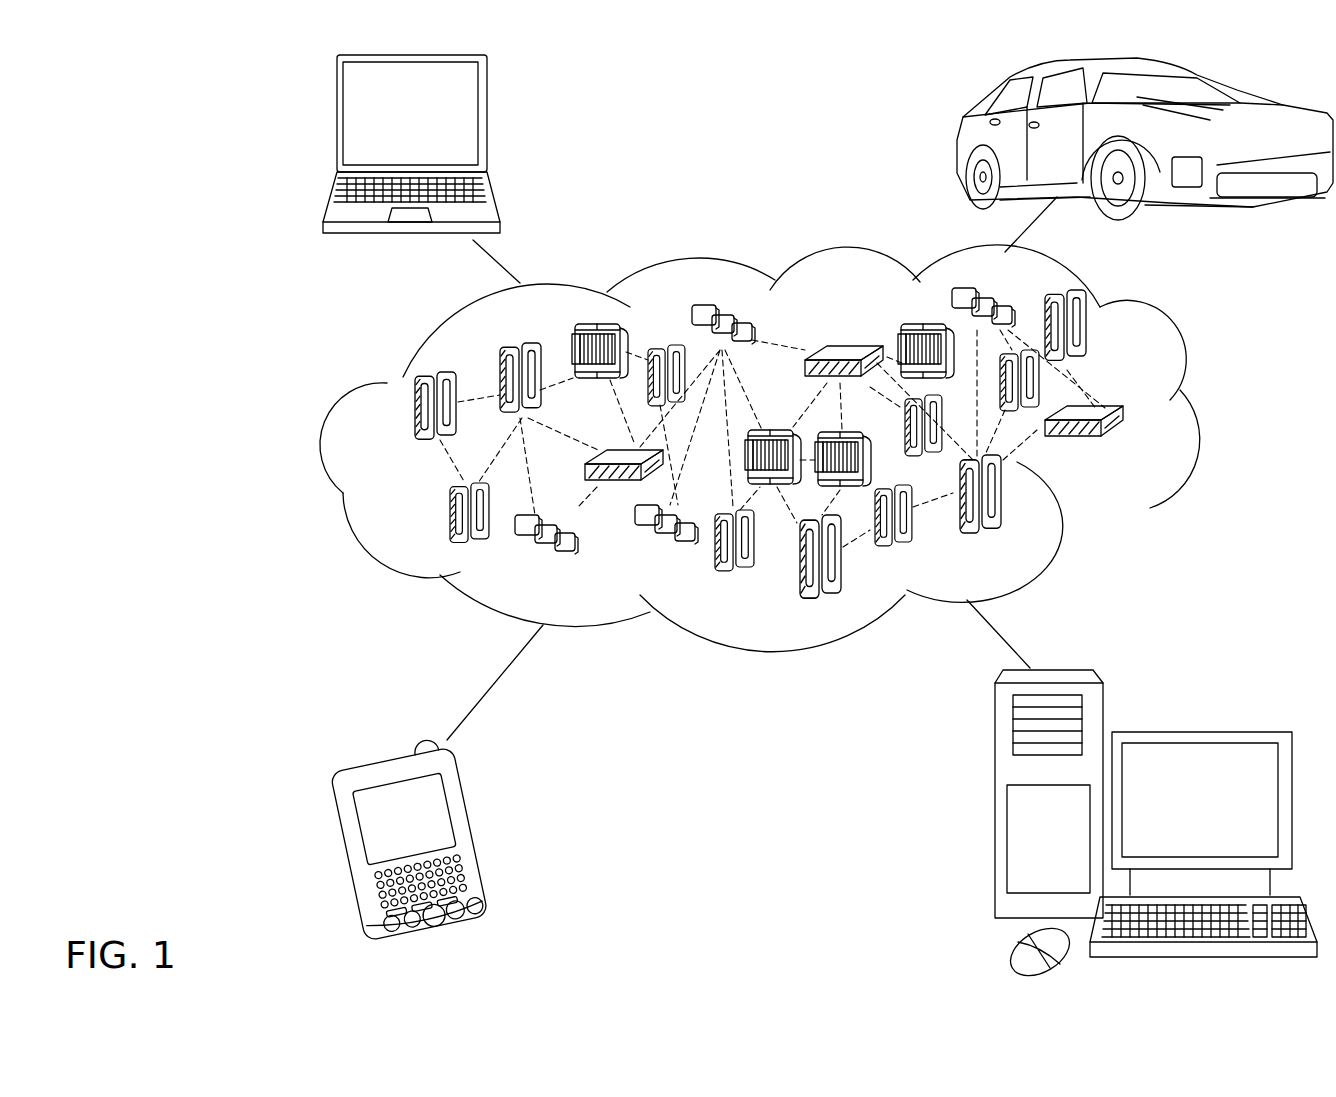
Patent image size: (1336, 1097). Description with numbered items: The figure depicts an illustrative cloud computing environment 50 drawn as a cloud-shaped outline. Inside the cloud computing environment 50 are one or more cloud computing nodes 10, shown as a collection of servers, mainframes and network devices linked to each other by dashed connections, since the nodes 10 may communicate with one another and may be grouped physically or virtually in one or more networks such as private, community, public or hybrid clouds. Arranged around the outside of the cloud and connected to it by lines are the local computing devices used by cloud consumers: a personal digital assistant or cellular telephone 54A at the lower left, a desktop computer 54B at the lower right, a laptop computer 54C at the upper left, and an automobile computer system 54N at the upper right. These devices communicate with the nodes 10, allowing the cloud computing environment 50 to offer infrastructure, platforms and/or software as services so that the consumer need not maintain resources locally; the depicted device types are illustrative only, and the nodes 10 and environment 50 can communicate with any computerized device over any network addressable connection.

The cloud computing nodes 10 is at (1135, 451).
The cloud computing environment 50 is at (1205, 421).
The personal digital assistant or cellular telephone 54A is at (482, 836).
The desktop computer 54B is at (1197, 731).
The laptop computer 54C is at (486, 123).
The automobile computer system 54N is at (960, 142).